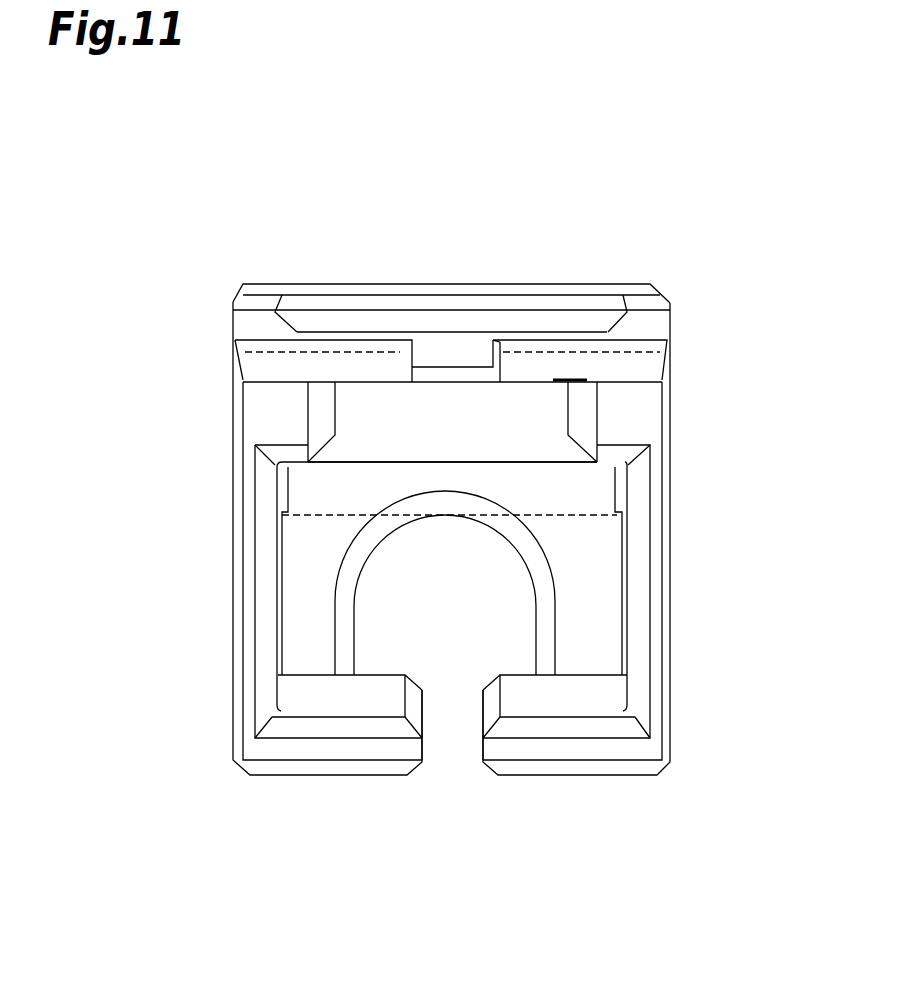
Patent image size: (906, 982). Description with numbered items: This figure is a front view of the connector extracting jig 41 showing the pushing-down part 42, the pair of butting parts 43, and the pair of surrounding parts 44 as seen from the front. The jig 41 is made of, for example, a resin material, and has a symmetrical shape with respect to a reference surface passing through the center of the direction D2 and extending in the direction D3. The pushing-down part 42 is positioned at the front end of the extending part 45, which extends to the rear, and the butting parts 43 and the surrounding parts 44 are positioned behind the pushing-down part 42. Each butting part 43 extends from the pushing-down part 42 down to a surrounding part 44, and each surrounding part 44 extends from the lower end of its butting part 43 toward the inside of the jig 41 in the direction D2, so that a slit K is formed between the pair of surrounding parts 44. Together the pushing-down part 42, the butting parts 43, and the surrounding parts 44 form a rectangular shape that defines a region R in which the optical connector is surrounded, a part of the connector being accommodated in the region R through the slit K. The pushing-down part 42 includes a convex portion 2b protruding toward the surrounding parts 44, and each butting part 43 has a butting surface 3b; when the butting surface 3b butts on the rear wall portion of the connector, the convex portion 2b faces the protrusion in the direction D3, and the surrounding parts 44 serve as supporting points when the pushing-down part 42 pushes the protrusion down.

The connector extracting jig 41 is at (454, 465).
The pushing-down part 42 is at (430, 390).
The butting part 43 is at (240, 568).
The surrounding part 44 is at (345, 747).
The extending part 45 is at (458, 283).
The convex portion 2b is at (478, 378).
The butting surface 3b is at (250, 612).
The region R is at (463, 600).
The slit K is at (422, 723).
The direction D2 is at (575, 918).
The direction D3 is at (728, 627).